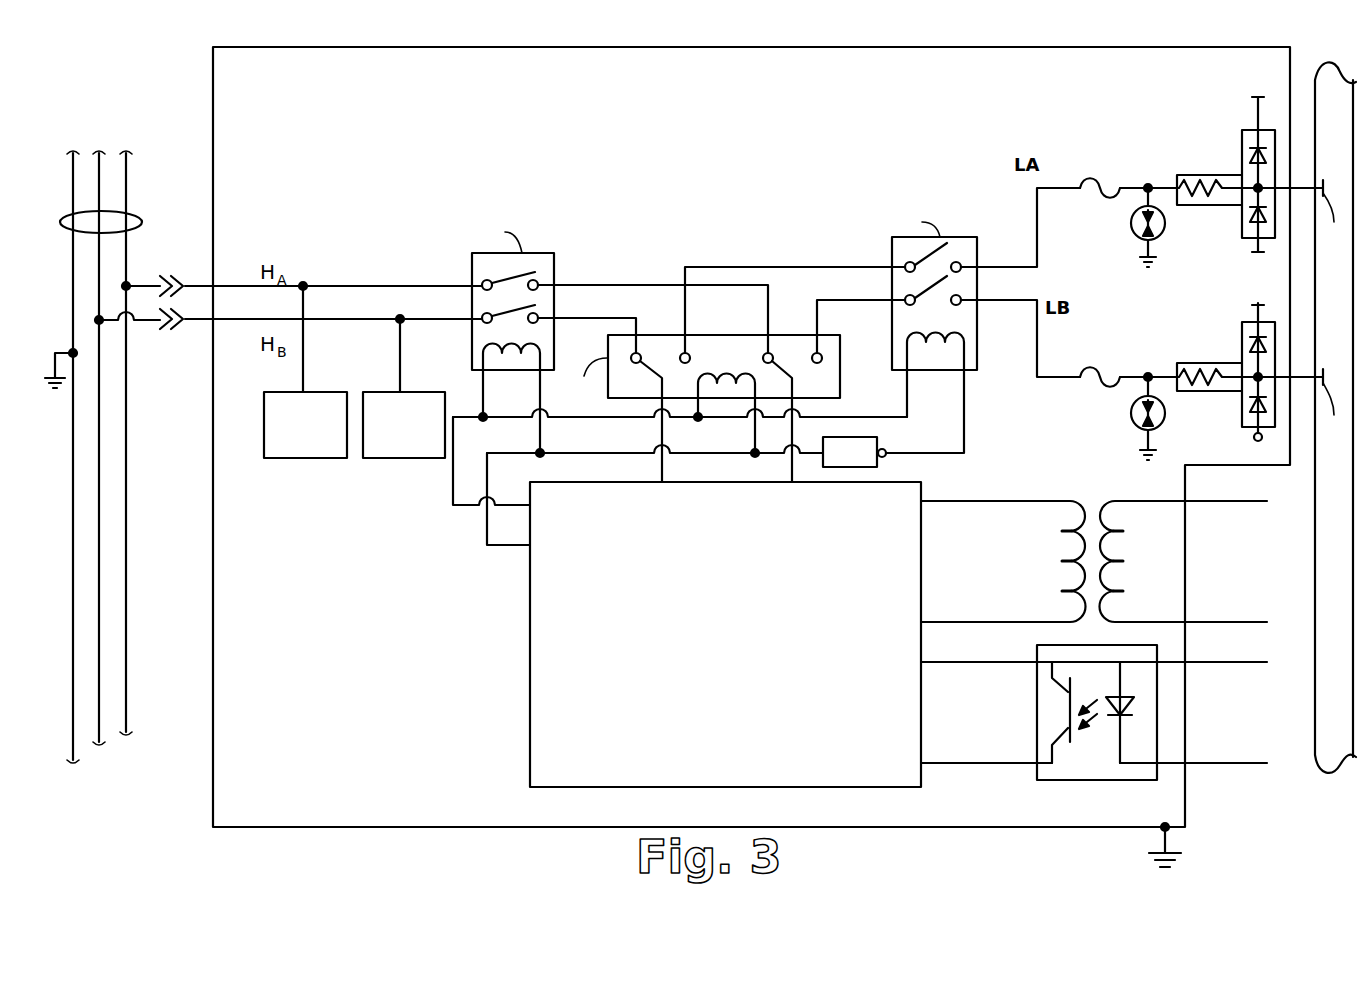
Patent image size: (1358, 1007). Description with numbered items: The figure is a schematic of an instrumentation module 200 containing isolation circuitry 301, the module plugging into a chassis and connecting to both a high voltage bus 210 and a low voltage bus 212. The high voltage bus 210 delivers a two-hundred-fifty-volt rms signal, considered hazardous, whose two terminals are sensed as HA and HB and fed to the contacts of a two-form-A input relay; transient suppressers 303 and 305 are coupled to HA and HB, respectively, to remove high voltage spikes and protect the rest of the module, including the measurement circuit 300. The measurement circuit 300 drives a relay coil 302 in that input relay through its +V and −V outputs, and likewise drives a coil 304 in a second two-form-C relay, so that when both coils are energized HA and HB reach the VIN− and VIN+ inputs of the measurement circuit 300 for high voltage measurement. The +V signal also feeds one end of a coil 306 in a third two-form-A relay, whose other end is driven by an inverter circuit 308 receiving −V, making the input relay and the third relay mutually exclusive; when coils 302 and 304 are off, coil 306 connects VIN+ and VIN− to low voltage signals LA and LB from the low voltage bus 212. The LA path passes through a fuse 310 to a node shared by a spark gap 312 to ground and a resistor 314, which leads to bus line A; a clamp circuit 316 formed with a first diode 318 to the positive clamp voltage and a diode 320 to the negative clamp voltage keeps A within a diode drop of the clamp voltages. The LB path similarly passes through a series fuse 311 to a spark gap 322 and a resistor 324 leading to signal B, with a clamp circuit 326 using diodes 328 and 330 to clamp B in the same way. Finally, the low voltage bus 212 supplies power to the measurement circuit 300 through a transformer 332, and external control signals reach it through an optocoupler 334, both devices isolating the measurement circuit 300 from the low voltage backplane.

The instrumentation module 200 is at (213, 105).
The high voltage bus 210 is at (143, 222).
The low voltage bus 212 is at (1313, 484).
The measurement circuit 300 is at (530, 708).
The isolation circuitry 301 is at (698, 245).
The relay coil 302 is at (473, 348).
The transient suppresser 303 is at (280, 392).
The coil 304 is at (733, 382).
The transient suppresser 305 is at (380, 392).
The coil 306 is at (965, 341).
The inverter circuit 308 is at (877, 438).
The fuse 310 is at (1096, 179).
The series fuse 311 is at (1096, 368).
The spark gap 312 is at (1131, 225).
The resistor 314 is at (1197, 175).
The clamp circuit 316 is at (1233, 173).
The first diode 318 is at (1250, 156).
The diode 320 is at (1228, 217).
The spark gap 322 is at (1131, 412).
The resistor 324 is at (1197, 364).
The clamp circuit 326 is at (1233, 373).
The diode 328 is at (1250, 357).
The diode 330 is at (1245, 408).
The transformer 332 is at (1082, 500).
The optocoupler 334 is at (1070, 780).